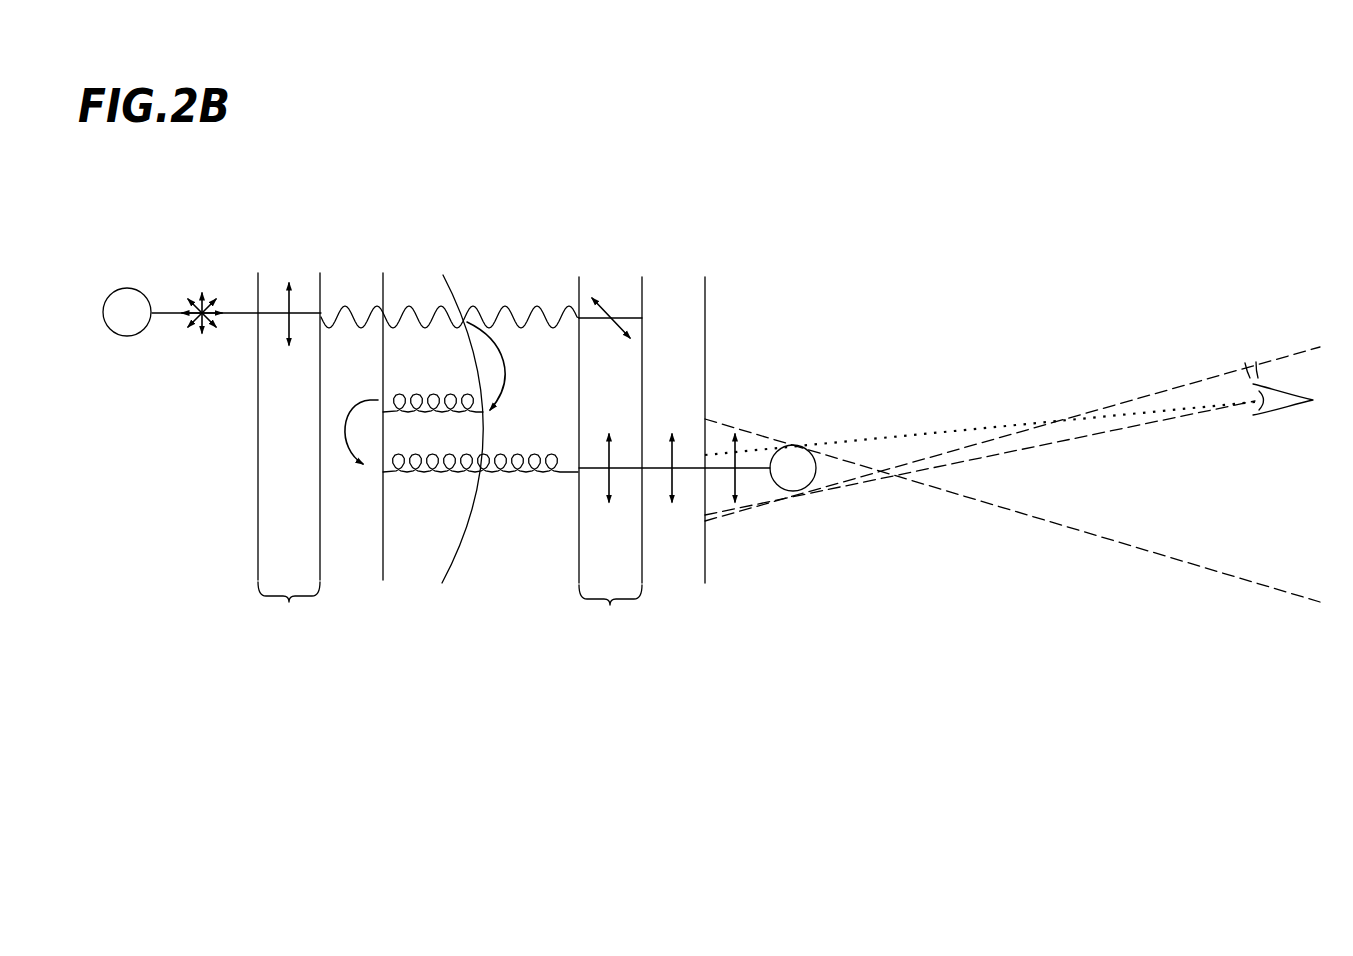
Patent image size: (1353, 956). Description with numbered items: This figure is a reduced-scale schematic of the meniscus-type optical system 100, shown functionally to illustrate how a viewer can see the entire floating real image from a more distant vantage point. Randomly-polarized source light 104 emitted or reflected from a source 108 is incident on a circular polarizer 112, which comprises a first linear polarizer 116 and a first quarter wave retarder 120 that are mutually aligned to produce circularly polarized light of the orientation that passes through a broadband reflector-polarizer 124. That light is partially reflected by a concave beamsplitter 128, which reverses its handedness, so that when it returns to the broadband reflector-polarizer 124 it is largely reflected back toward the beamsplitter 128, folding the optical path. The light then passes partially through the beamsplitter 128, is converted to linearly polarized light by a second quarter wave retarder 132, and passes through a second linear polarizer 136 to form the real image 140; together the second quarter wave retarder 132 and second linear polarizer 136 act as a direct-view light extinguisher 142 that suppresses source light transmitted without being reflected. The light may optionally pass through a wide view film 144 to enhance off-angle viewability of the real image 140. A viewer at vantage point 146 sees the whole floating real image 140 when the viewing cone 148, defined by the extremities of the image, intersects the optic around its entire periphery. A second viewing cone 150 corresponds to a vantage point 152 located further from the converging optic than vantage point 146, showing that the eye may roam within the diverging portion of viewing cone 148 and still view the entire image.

The meniscus-type optical system 100 is at (832, 267).
The randomly-polarized source light 104 is at (202, 335).
The source 108 is at (140, 343).
The circular polarizer 112 is at (279, 405).
The first linear polarizer 116 is at (257, 274).
The first quarter wave retarder 120 is at (320, 276).
The broadband reflector-polarizer 124 is at (383, 273).
The concave beamsplitter 128 is at (455, 285).
The second quarter wave retarder 132 is at (583, 282).
The second linear polarizer 136 is at (645, 283).
The real image 140 is at (788, 493).
The direct-view light extinguisher 142 is at (655, 412).
The wide view film 144 is at (707, 285).
The vantage point 146 is at (880, 470).
The viewing cone 148 is at (1210, 380).
The viewing cone 150 is at (888, 438).
The vantage point 152 is at (1253, 422).